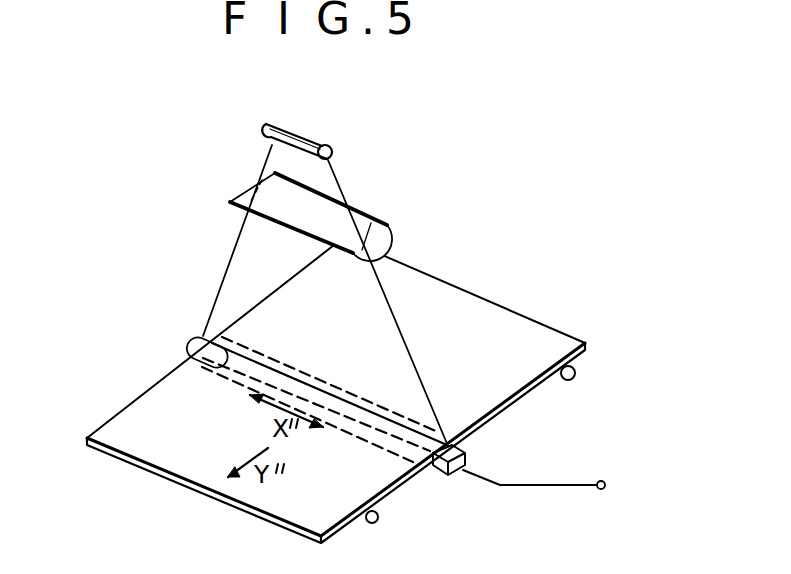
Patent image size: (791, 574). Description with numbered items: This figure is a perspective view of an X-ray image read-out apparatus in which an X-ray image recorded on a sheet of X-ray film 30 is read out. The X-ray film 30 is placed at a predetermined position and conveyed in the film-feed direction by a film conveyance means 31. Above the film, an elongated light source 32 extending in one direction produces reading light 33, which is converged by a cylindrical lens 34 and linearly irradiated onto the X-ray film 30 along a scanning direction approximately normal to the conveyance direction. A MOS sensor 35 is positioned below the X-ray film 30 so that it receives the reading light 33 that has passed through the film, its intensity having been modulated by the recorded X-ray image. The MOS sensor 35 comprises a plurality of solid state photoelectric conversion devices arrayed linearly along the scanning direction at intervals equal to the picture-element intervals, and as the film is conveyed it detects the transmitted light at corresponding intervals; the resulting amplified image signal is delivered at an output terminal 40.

The X-ray film 30 is at (555, 330).
The film conveyance means 31 is at (575, 376).
The elongated light source 32 is at (329, 142).
The reading light 33 is at (338, 184).
The cylindrical lens 34 is at (384, 218).
The MOS sensor 35 is at (468, 457).
The output terminal 40 is at (602, 490).